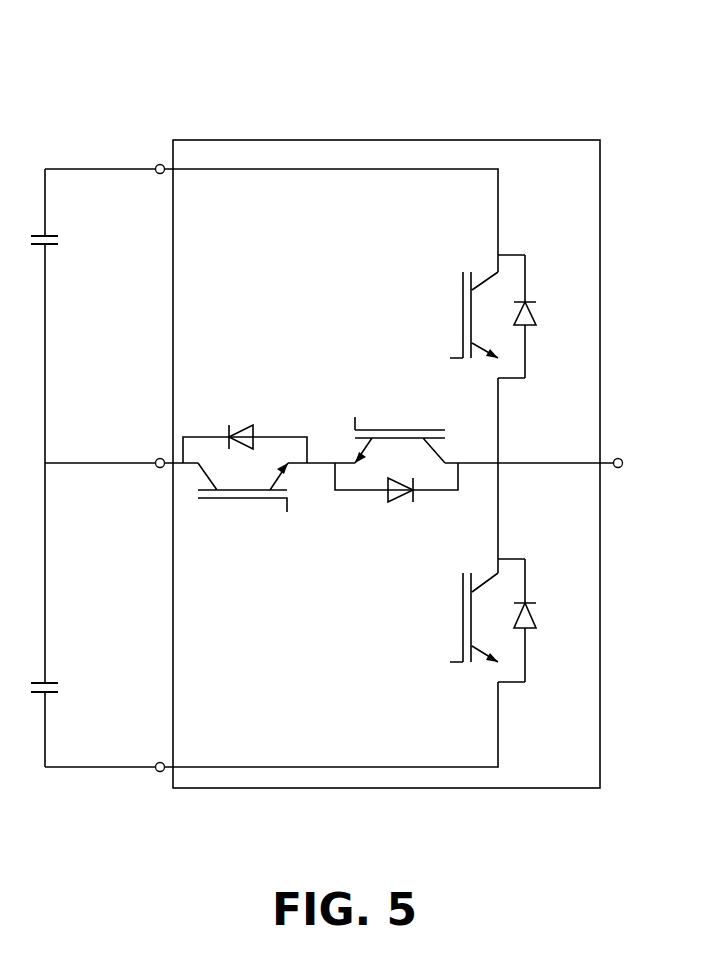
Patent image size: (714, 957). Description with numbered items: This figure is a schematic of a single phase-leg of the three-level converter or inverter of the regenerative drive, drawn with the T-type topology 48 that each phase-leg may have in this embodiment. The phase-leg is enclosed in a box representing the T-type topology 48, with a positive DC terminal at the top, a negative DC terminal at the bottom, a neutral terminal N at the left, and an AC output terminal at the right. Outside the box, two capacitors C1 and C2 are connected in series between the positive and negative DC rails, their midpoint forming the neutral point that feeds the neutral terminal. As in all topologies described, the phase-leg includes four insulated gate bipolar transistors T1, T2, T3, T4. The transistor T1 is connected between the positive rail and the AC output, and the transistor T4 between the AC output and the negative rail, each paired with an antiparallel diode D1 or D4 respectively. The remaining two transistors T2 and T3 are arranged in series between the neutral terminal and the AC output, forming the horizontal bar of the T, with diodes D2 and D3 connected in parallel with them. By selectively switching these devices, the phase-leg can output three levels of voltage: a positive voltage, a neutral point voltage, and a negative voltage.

The T-type topology 48 is at (347, 406).
The DC link capacitor C1 is at (64, 241).
The DC link capacitor C2 is at (65, 693).
The insulated gate bipolar transistor T1 is at (474, 316).
The insulated gate bipolar transistor T2 is at (276, 500).
The insulated gate bipolar transistor T3 is at (400, 422).
The insulated gate bipolar transistor T4 is at (474, 620).
The diode D1 is at (439, 437).
The diode D2 is at (245, 422).
The diode D3 is at (396, 502).
The diode D4 is at (548, 620).